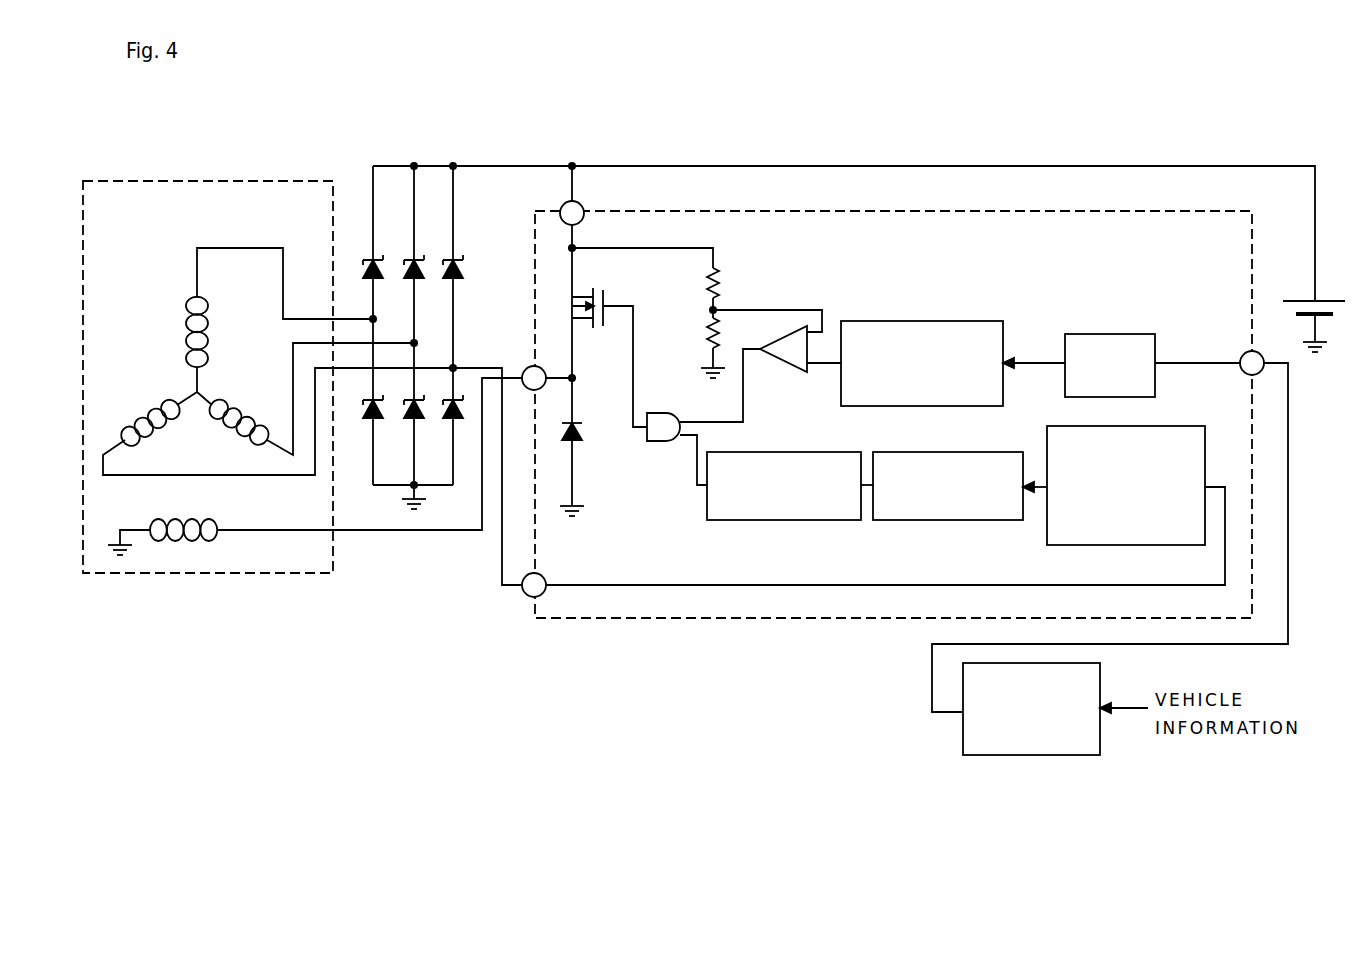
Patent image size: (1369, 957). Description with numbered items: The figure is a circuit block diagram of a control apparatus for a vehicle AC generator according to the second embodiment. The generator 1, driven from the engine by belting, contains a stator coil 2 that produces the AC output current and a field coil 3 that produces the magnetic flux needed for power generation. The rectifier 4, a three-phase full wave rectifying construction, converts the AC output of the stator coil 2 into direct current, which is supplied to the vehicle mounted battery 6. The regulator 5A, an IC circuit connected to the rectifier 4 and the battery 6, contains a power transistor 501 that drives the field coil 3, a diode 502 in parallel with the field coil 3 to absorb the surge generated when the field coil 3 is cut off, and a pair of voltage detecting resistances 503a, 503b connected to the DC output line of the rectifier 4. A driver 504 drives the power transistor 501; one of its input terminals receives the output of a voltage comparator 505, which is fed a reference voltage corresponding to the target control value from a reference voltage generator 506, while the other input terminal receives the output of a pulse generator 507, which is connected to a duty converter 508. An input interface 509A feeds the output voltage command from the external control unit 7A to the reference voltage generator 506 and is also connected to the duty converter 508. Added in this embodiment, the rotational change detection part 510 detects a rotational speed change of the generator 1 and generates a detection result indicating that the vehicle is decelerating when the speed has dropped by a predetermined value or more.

The generator 1 is at (205, 181).
The stator coil 2 is at (183, 300).
The field coil 3 is at (190, 516).
The rectifier 4 is at (398, 166).
The regulator 5A is at (1030, 211).
The vehicle mounted battery 6 is at (1307, 298).
The external control unit 7A is at (1020, 755).
The power transistor 501 is at (590, 325).
The diode 502 is at (582, 432).
The voltage detecting resistance 503a is at (722, 276).
The voltage detecting resistance 503b is at (705, 336).
The driver 504 is at (652, 443).
The voltage comparator 505 is at (782, 366).
The reference voltage generator 506 is at (925, 321).
The pulse generator 507 is at (788, 520).
The duty converter 508 is at (930, 520).
The input interface 509A is at (1102, 334).
The rotational change detection part 510 is at (1108, 545).